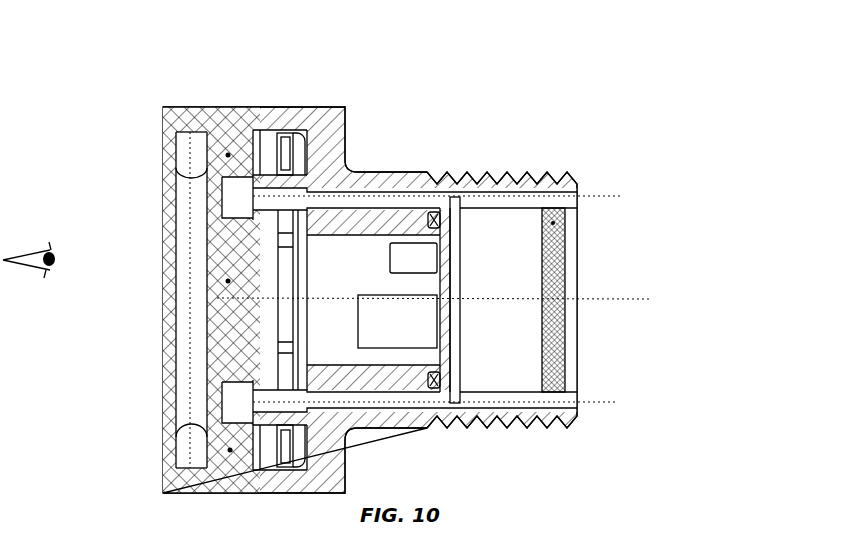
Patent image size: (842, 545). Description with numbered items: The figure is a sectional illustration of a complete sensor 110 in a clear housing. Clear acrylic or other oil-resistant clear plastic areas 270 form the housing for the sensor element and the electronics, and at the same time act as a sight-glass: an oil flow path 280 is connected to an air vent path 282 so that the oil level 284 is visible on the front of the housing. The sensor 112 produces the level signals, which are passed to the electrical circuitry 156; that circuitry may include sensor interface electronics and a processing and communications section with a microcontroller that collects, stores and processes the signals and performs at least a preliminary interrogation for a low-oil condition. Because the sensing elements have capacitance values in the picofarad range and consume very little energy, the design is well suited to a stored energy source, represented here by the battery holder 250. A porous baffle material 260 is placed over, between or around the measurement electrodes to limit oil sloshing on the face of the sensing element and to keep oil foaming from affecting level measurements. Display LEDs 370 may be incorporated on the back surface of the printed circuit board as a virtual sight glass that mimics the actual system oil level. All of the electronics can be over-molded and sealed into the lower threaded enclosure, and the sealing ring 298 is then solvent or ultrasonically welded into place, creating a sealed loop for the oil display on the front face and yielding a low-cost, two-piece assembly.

The sensor 110 is at (618, 99).
The sensor 112 is at (433, 185).
The electrical circuitry 156 is at (397, 321).
The battery holder 250 is at (413, 258).
The porous baffle material 260 is at (545, 207).
The clear acrylic areas 270 is at (216, 298).
The oil flow path 280 is at (604, 397).
The air vent path 282 is at (597, 195).
The oil level 284 is at (486, 296).
The sealing ring 298 is at (161, 114).
The bar graph LEDs 370 is at (459, 203).